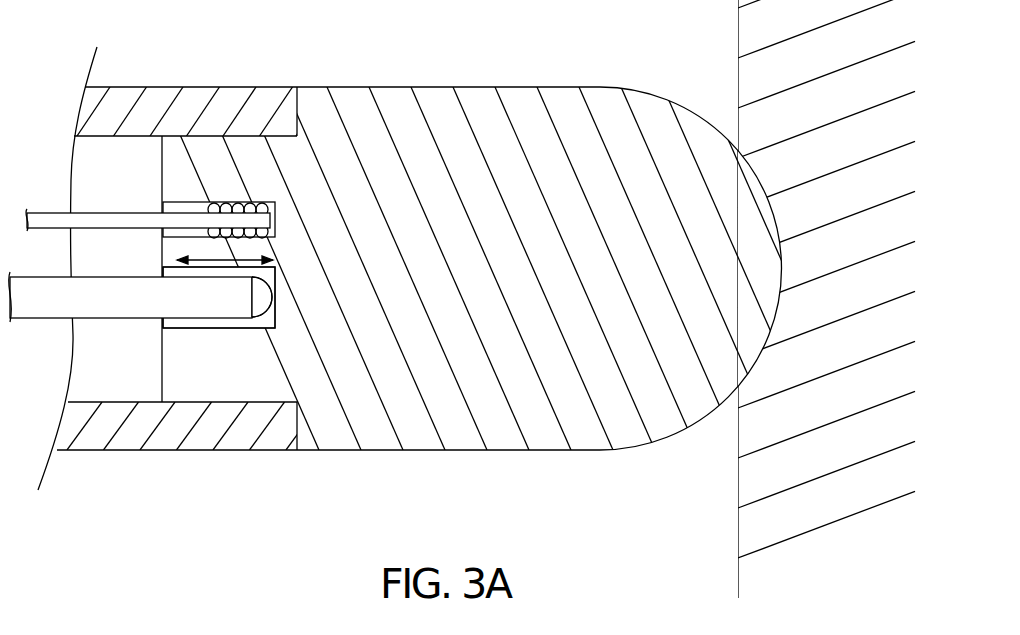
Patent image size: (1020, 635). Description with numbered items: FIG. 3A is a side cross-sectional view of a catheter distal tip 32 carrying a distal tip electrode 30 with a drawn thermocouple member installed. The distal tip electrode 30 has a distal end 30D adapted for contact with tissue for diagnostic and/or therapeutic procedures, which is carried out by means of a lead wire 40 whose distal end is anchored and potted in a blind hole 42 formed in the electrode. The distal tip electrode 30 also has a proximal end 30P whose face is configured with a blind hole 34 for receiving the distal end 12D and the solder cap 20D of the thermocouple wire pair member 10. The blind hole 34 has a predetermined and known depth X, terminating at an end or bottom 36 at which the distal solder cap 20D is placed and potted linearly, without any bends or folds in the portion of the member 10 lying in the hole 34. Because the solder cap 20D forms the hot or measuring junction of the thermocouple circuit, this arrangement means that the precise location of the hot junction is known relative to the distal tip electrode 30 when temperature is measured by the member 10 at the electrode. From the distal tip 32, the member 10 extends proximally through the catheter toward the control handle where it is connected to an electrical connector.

The thermocouple wire pair member 10 is at (33, 302).
The distal end of the member 12D is at (255, 330).
The solder cap 20D is at (262, 302).
The distal tip electrode 30 is at (513, 433).
The distal end of the tip electrode 30D is at (782, 270).
The proximal end of the tip electrode 30P is at (182, 387).
The catheter distal tip 32 is at (181, 569).
The blind hole 34 is at (218, 330).
The bottom of the blind hole 36 is at (268, 296).
The lead wire 40 is at (43, 220).
The blind hole 42 is at (247, 203).
The depth X is at (256, 260).